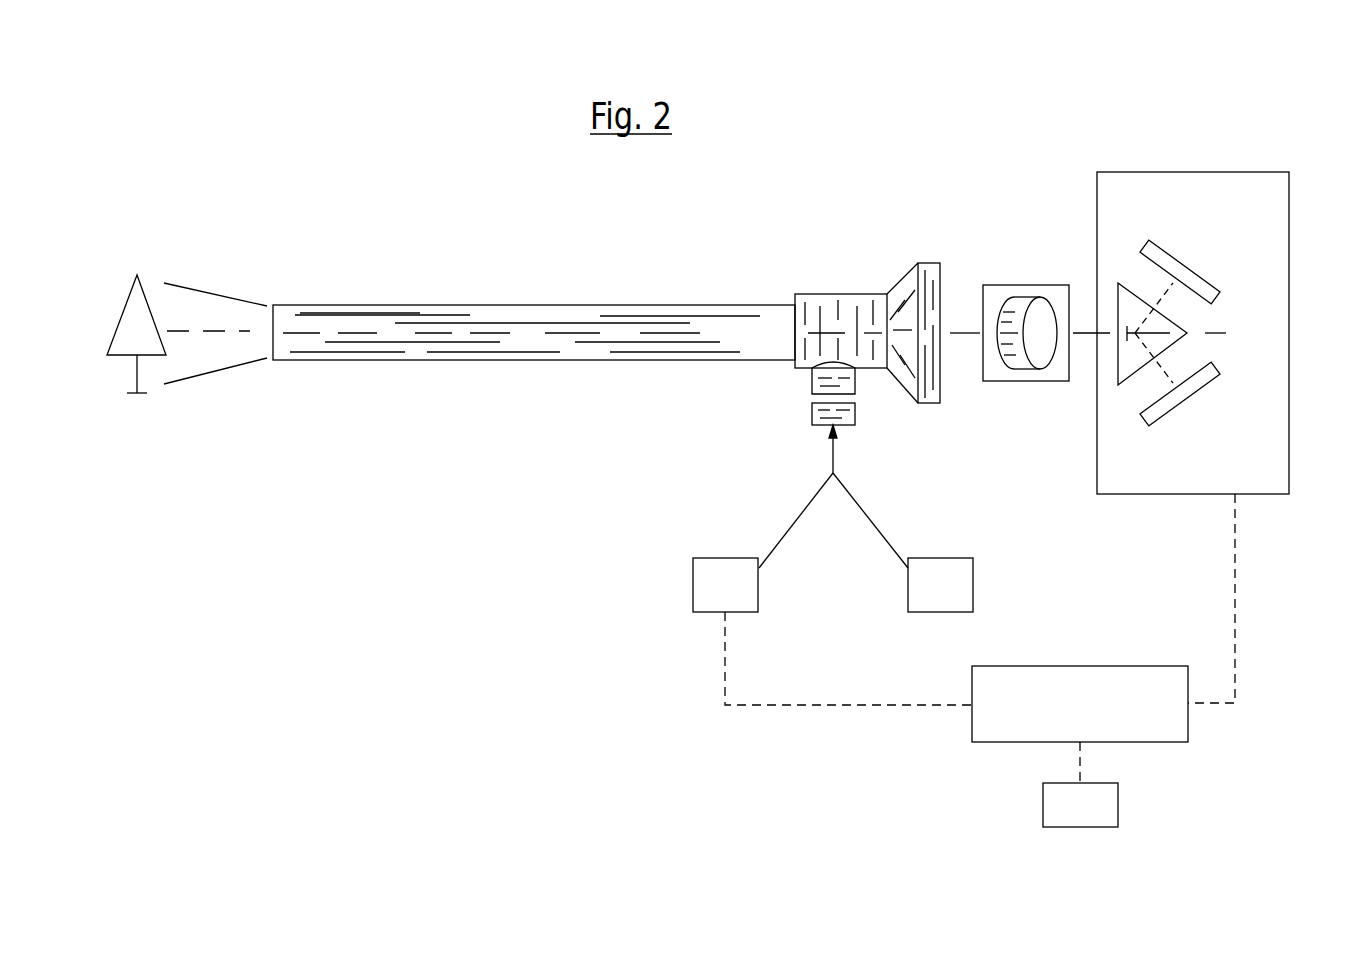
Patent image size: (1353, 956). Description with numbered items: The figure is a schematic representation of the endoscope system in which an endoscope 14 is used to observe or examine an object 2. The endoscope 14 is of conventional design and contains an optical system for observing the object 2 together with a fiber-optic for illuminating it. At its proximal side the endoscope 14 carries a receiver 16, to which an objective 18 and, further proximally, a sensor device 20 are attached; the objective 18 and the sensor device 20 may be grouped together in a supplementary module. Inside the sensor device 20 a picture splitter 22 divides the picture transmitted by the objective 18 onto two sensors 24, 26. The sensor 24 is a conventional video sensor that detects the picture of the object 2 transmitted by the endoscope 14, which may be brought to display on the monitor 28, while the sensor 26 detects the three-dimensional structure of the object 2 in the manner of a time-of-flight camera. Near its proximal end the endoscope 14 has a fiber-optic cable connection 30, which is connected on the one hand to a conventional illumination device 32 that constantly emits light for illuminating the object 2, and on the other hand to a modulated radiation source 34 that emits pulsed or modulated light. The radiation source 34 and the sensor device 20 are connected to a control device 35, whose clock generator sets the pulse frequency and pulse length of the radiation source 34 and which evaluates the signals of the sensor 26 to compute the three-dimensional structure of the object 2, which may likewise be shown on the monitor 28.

The object 2 is at (132, 320).
The endoscope 14 is at (503, 302).
The receiver 16 is at (898, 265).
The objective 18 is at (1022, 283).
The sensor device 20 is at (1237, 172).
The picture splitter 22 is at (1120, 265).
The sensor 24 is at (1218, 278).
The sensor 26 is at (1218, 390).
The monitor 28 is at (1080, 805).
The fiber-optic cable connection 30 is at (807, 388).
The illumination device 32 is at (940, 586).
The radiation source 34 is at (725, 586).
The control device 35 is at (1080, 704).